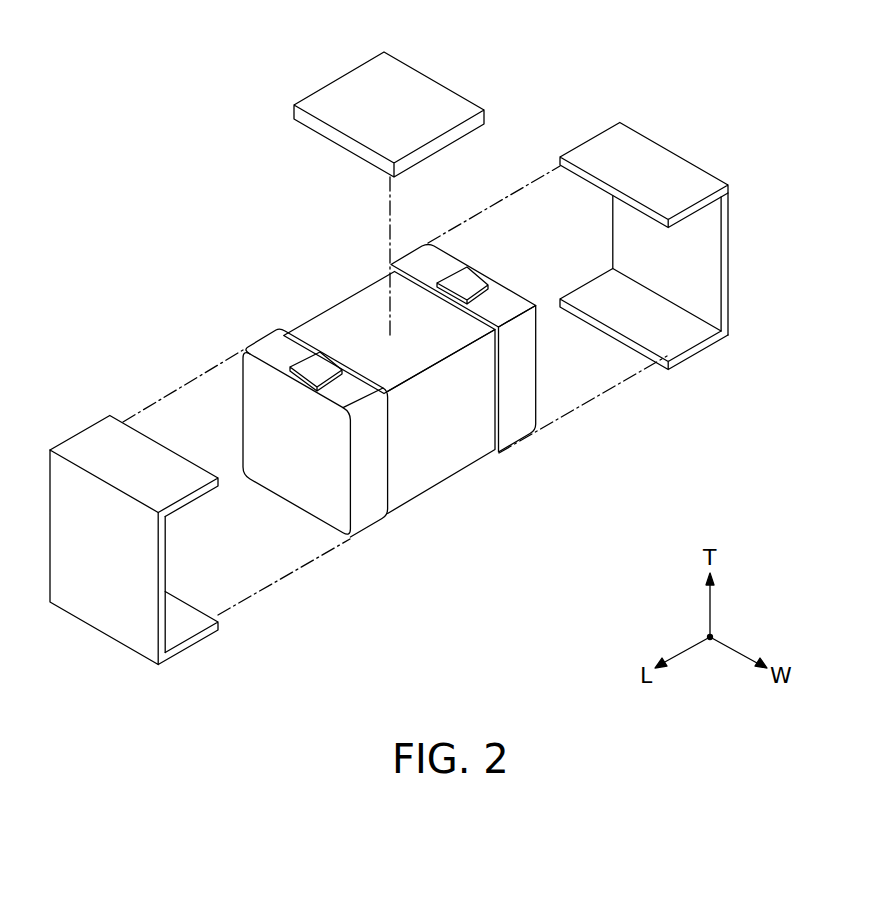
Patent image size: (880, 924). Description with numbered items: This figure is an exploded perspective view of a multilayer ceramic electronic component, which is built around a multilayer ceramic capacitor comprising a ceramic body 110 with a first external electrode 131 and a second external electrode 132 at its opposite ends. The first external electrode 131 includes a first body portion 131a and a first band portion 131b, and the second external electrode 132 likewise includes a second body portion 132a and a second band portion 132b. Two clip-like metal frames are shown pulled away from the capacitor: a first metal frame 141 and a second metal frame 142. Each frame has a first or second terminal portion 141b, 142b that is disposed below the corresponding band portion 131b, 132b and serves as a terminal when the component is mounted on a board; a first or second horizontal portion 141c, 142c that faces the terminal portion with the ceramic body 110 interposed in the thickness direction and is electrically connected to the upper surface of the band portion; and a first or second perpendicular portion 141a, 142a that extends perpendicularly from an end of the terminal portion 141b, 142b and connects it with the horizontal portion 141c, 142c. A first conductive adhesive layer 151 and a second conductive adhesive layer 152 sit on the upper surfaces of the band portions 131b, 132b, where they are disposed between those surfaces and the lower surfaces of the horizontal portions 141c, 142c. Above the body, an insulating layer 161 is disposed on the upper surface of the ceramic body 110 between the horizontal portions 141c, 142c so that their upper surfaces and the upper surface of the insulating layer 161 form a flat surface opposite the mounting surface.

The ceramic body 110 is at (358, 320).
The first external electrode 131 is at (393, 468).
The first body portion 131a is at (318, 482).
The first band portion 131b is at (365, 380).
The second external electrode 132 is at (557, 373).
The second body portion 132a is at (530, 297).
The second band portion 132b is at (517, 408).
The first metal frame 141 is at (204, 552).
The first perpendicular portion 141a is at (140, 577).
The first terminal portion 141b is at (229, 640).
The first horizontal portion 141c is at (192, 470).
The second metal frame 142 is at (713, 246).
The second perpendicular portion 142a is at (683, 250).
The second terminal portion 142b is at (675, 317).
The second horizontal portion 142c is at (683, 167).
The first conductive adhesive layer 151 is at (305, 360).
The second conductive adhesive layer 152 is at (465, 283).
The insulating layer 161 is at (357, 93).